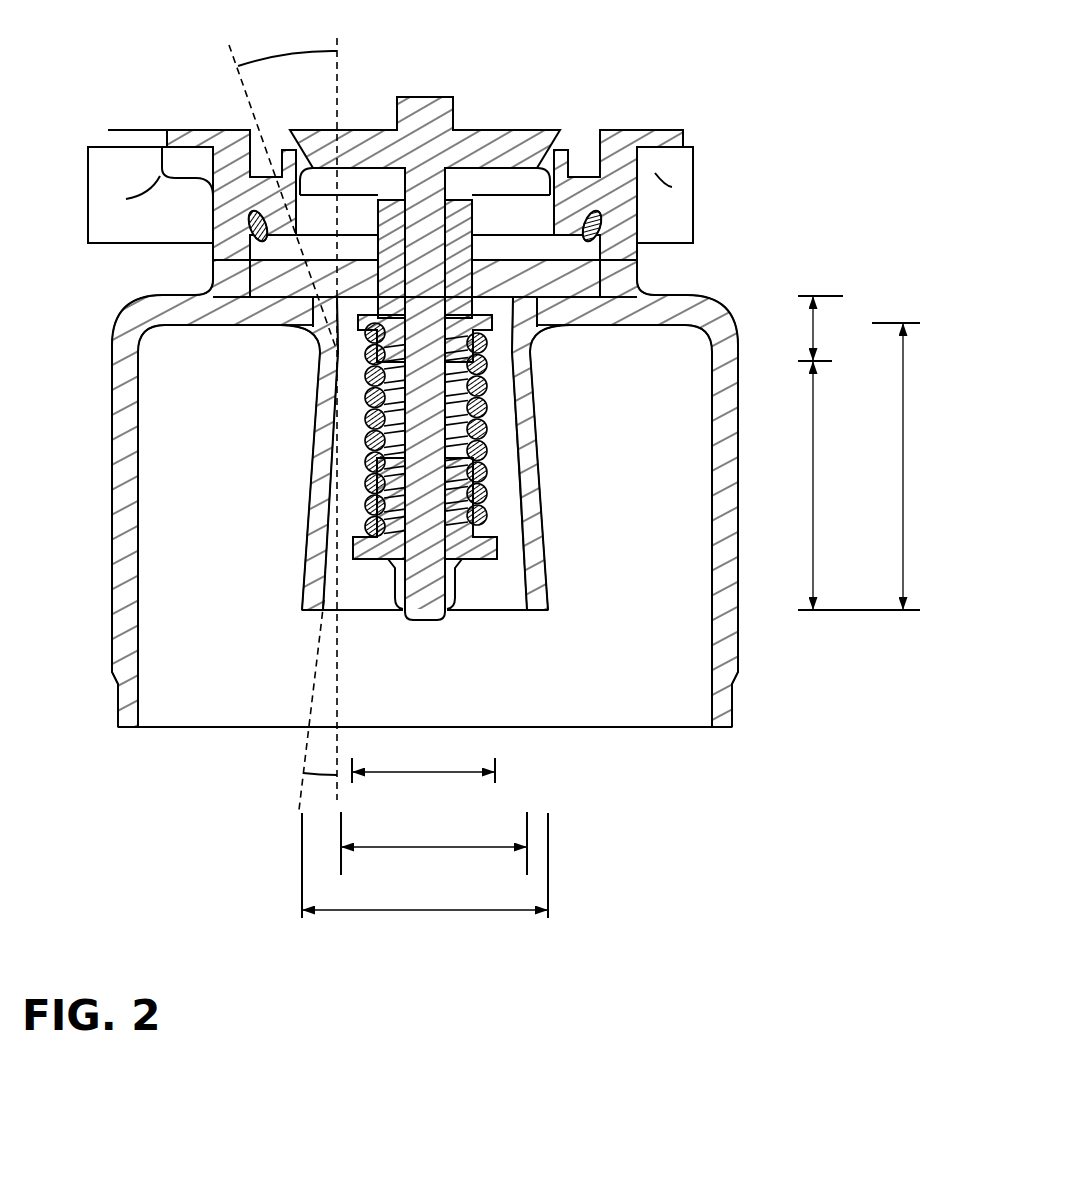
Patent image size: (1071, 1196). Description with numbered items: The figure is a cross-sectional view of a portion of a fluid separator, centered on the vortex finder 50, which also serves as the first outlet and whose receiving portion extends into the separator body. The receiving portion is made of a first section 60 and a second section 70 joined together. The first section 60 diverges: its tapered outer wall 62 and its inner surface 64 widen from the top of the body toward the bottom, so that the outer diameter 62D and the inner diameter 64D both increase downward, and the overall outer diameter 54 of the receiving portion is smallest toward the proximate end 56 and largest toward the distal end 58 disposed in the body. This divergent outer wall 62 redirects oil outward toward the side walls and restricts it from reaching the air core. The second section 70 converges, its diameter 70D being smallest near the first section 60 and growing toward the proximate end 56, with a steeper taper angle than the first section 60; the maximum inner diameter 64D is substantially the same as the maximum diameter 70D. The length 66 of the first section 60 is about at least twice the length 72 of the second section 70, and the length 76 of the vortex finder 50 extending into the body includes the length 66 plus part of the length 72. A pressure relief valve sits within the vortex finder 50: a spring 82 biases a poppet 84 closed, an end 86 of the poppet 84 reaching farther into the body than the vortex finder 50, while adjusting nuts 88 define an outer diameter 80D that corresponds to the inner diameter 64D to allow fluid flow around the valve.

The vortex finder 50 is at (437, 421).
The poppet 84 is at (475, 152).
The proximate end 56 is at (292, 347).
The second section 70 is at (548, 348).
The spring 82 is at (490, 412).
The tapered outer wall 62 is at (417, 463).
The inner surface 64 is at (510, 522).
The first section 60 is at (560, 568).
The adjusting nut 88 is at (355, 549).
The end of poppet 86 is at (422, 604).
The distal end 58 is at (555, 628).
The length of second section 72 is at (815, 326).
The length of first section 66 is at (815, 463).
The length of vortex finder 76 is at (902, 427).
The outer diameter of pressure relief valve portions 80D is at (418, 773).
The inner diameter of first section 64D is at (400, 848).
The diameter of second section 70D is at (434, 856).
The outer diameter of receiving portion 54 is at (415, 911).
The outer diameter of first section 62D is at (425, 890).